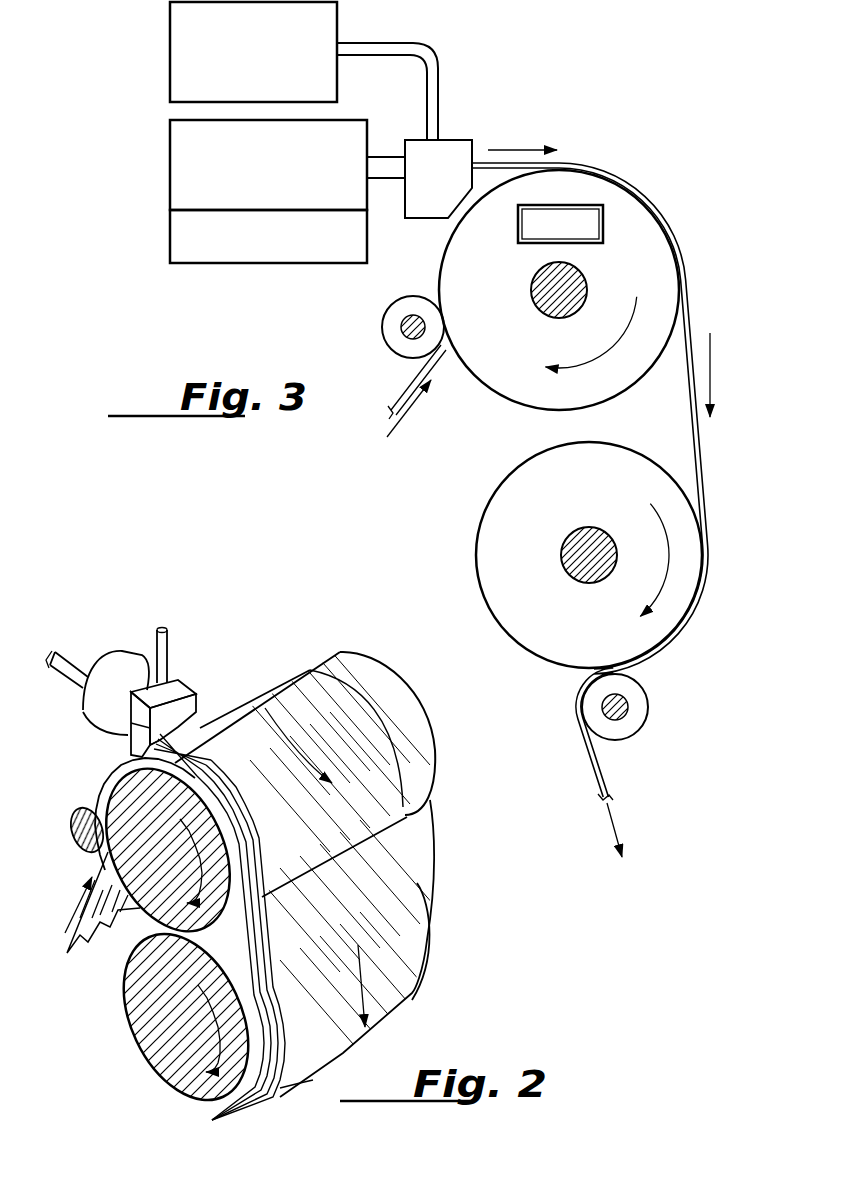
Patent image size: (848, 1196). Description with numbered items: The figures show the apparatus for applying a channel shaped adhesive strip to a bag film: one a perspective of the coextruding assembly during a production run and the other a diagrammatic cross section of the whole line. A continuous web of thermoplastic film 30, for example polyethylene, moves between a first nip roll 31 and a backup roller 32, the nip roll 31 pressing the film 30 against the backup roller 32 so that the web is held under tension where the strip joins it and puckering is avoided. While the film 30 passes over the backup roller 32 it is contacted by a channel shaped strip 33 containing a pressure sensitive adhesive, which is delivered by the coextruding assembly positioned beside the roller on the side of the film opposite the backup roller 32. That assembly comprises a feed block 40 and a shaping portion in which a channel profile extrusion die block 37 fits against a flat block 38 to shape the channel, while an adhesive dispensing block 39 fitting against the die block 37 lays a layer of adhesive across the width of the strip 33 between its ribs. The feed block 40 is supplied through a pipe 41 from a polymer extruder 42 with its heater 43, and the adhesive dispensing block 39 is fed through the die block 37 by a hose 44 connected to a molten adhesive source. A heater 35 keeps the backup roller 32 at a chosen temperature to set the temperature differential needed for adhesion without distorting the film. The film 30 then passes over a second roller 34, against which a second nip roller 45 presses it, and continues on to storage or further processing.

In FIG. 3, the thermoplastic film 30 is at (687, 310).
In FIG. 2, the thermoplastic film 30 is at (412, 850).
In FIG. 3, the first nip roll 31 is at (393, 312).
In FIG. 2, the first nip roll 31 is at (90, 836).
In FIG. 3, the backup roller 32 is at (497, 388).
In FIG. 2, the backup roller 32 is at (425, 713).
In FIG. 2, the channel shaped strip 33 is at (200, 747).
In FIG. 3, the second roller 34 is at (480, 522).
In FIG. 2, the second roller 34 is at (433, 937).
In FIG. 3, the heater 35 is at (453, 147).
In FIG. 2, the heater 35 is at (135, 752).
In FIG. 2, the channel profile extrusion die block 37 is at (132, 714).
In FIG. 2, the flat block 38 is at (158, 750).
In FIG. 2, the adhesive dispensing block 39 is at (187, 698).
In FIG. 2, the feed block 40 is at (112, 668).
In FIG. 3, the pipe 41 is at (382, 153).
In FIG. 2, the pipe 41 is at (63, 656).
In FIG. 3, the polymer extruder 42 is at (170, 175).
In FIG. 3, the heater 43 is at (170, 236).
In FIG. 3, the hose 44 is at (398, 48).
In FIG. 2, the hose 44 is at (167, 638).
In FIG. 3, the second nip roller 45 is at (648, 713).